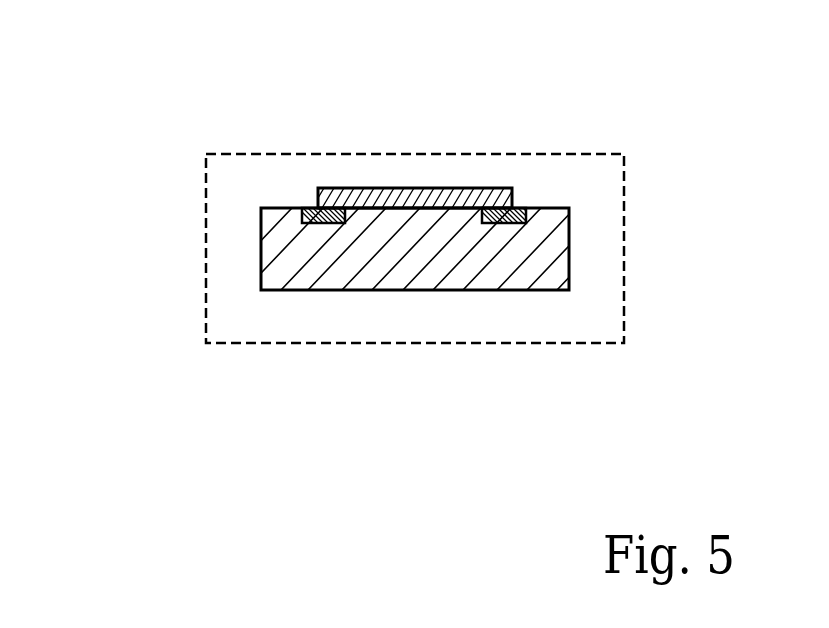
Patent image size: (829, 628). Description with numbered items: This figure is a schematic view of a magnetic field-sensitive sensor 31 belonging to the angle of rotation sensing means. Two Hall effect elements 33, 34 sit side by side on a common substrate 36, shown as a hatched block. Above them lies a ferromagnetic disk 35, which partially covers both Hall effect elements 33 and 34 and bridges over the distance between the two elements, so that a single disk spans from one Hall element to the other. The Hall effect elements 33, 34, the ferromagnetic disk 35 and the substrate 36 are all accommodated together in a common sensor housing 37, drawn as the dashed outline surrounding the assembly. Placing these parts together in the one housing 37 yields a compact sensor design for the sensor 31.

The sensor arrangement 31 is at (140, 89).
The Hall effect element 33 is at (327, 223).
The Hall effect element 34 is at (489, 224).
The ferromagnetic disk 35 is at (380, 187).
The substrate 36 is at (392, 255).
The sensor housing 37 is at (577, 345).